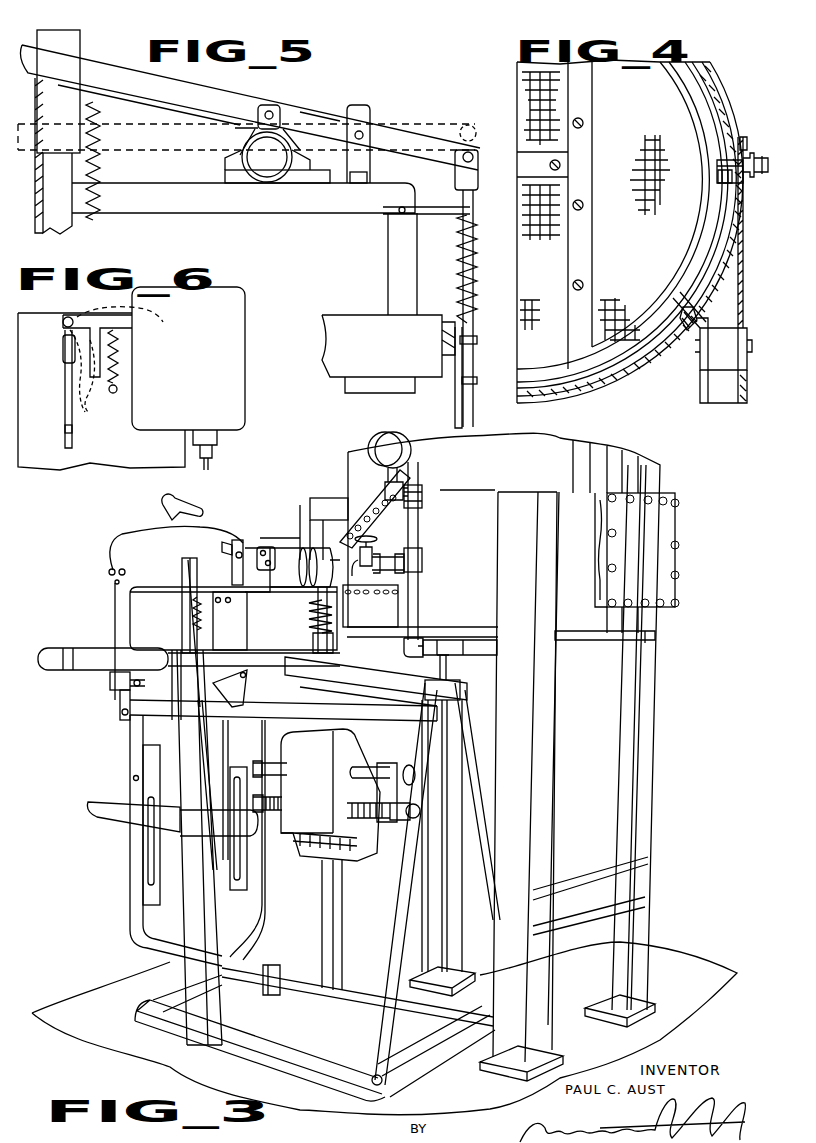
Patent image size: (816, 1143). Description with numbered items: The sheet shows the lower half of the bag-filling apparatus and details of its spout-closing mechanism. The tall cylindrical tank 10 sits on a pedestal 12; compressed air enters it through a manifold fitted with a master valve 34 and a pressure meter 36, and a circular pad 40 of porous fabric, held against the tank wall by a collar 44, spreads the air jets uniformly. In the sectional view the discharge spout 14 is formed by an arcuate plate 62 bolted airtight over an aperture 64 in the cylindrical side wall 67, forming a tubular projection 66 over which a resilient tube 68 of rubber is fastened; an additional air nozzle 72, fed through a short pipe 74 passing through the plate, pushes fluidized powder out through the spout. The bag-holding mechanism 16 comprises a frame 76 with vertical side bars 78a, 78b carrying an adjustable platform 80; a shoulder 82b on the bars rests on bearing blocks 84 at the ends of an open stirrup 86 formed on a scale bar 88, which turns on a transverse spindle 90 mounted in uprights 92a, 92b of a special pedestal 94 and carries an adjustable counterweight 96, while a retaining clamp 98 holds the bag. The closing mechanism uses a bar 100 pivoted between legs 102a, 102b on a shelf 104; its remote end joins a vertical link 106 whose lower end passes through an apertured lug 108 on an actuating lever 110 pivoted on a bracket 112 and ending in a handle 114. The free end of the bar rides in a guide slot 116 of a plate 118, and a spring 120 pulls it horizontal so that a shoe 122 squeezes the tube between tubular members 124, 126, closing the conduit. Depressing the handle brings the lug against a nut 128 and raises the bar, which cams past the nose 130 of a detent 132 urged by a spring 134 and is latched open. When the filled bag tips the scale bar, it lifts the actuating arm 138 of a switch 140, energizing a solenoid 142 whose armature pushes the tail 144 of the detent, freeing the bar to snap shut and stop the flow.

In FIG. 4, the cylindrical tank 10 is at (732, 98).
In FIG. 3, the cylindrical tank 10 is at (670, 481).
In FIG. 3, the pedestal 12 is at (672, 712).
In FIG. 4, the discharge spout 14 is at (738, 263).
In FIG. 3, the mechanism 16 is at (120, 754).
In FIG. 3, the master valve 34 is at (378, 534).
In FIG. 3, the pressure meter 36 is at (400, 450).
In FIG. 4, the circular pad 40 is at (650, 129).
In FIG. 4, the collar 44 is at (540, 387).
In FIG. 4, the arcuate plate 62 is at (683, 330).
In FIG. 3, the arcuate plate 62 is at (393, 546).
In FIG. 4, the aperture 64 is at (690, 293).
In FIG. 4, the tubular projection 66 is at (703, 370).
In FIG. 3, the tubular projection 66 is at (318, 498).
In FIG. 4, the cylindrical side wall 67 is at (617, 370).
In FIG. 3, the cylindrical side wall 67 is at (467, 491).
In FIG. 5, the resilient tube 68 is at (245, 162).
In FIG. 4, the resilient tube 68 is at (728, 397).
In FIG. 3, the resilient tube 68 is at (290, 548).
In FIG. 4, the air nozzle 72 is at (718, 178).
In FIG. 4, the short pipe 74 is at (760, 158).
In FIG. 3, the frame 76 is at (132, 859).
In FIG. 3, the vertical side bar 78a is at (253, 880).
In FIG. 3, the vertical side bar 78b is at (145, 890).
In FIG. 3, the platform 80 is at (113, 798).
In FIG. 3, the shoulder 82b is at (110, 682).
In FIG. 3, the bracket 84 is at (120, 707).
In FIG. 3, the open stirrup 86 is at (130, 710).
In FIG. 3, the scale bar 88 is at (282, 705).
In FIG. 3, the transverse spindle 90 is at (212, 745).
In FIG. 3, the upright 92a is at (335, 898).
In FIG. 3, the upright 92b is at (200, 970).
In FIG. 3, the special pedestal 94 is at (205, 1008).
In FIG. 3, the counterweight 96 is at (330, 795).
In FIG. 3, the retaining clamp 98 is at (178, 497).
In FIG. 5, the bar 100 is at (343, 88).
In FIG. 6, the bar 100 is at (66, 350).
In FIG. 3, the bar 100 is at (278, 538).
In FIG. 5, the leg 102a is at (370, 108).
In FIG. 3, the leg 102a is at (232, 542).
In FIG. 3, the leg 102b is at (222, 548).
In FIG. 5, the shelf 104 is at (357, 202).
In FIG. 3, the shelf 104 is at (282, 597).
In FIG. 5, the vertical link 106 is at (468, 230).
In FIG. 3, the vertical link 106 is at (114, 594).
In FIG. 5, the apertured lug 108 is at (473, 340).
In FIG. 3, the apertured lug 108 is at (300, 622).
In FIG. 5, the actuating lever 110 is at (433, 352).
In FIG. 3, the actuating lever 110 is at (64, 642).
In FIG. 3, the bracket 112 is at (248, 682).
In FIG. 3, the handle 114 is at (70, 648).
In FIG. 5, the guide slot 116 is at (58, 48).
In FIG. 6, the guide slot 116 is at (66, 398).
In FIG. 3, the guide slot 116 is at (300, 505).
In FIG. 5, the plate 118 is at (127, 68).
In FIG. 6, the plate 118 is at (101, 391).
In FIG. 3, the plate 118 is at (345, 513).
In FIG. 5, the spring 120 is at (100, 195).
In FIG. 3, the spring 120 is at (313, 622).
In FIG. 5, the shoe 122 is at (222, 148).
In FIG. 3, the shoe 122 is at (262, 547).
In FIG. 5, the tubular member 124 is at (305, 178).
In FIG. 3, the tubular member 126 is at (341, 602).
In FIG. 5, the nut 128 is at (472, 382).
In FIG. 3, the nut 128 is at (177, 720).
In FIG. 6, the nose 130 is at (77, 365).
In FIG. 5, the detent 132 is at (93, 82).
In FIG. 6, the detent 132 is at (80, 390).
In FIG. 6, the spring 134 is at (118, 352).
In FIG. 3, the actuating arm 138 is at (340, 692).
In FIG. 3, the switch 140 is at (335, 680).
In FIG. 6, the solenoid 142 is at (230, 322).
In FIG. 6, the tail 144 is at (128, 322).